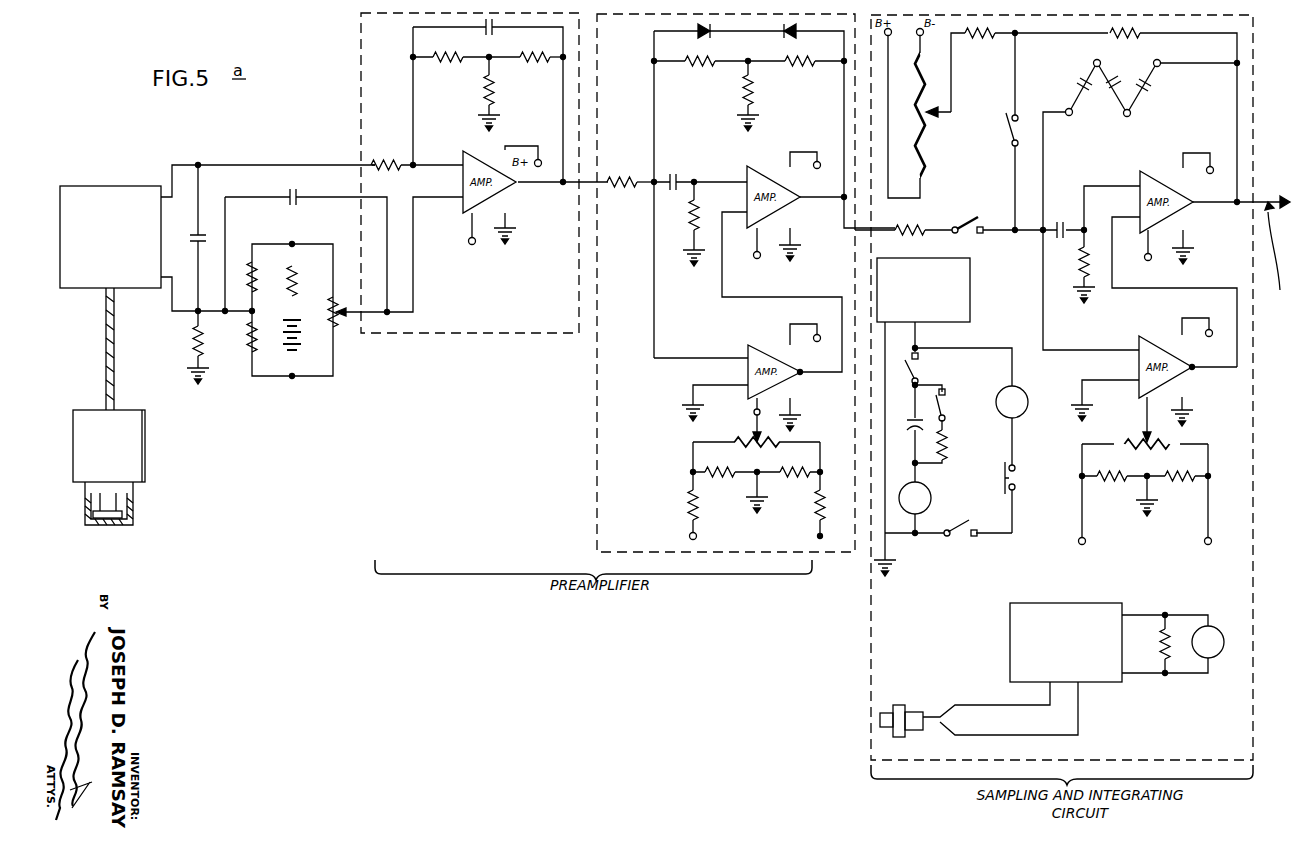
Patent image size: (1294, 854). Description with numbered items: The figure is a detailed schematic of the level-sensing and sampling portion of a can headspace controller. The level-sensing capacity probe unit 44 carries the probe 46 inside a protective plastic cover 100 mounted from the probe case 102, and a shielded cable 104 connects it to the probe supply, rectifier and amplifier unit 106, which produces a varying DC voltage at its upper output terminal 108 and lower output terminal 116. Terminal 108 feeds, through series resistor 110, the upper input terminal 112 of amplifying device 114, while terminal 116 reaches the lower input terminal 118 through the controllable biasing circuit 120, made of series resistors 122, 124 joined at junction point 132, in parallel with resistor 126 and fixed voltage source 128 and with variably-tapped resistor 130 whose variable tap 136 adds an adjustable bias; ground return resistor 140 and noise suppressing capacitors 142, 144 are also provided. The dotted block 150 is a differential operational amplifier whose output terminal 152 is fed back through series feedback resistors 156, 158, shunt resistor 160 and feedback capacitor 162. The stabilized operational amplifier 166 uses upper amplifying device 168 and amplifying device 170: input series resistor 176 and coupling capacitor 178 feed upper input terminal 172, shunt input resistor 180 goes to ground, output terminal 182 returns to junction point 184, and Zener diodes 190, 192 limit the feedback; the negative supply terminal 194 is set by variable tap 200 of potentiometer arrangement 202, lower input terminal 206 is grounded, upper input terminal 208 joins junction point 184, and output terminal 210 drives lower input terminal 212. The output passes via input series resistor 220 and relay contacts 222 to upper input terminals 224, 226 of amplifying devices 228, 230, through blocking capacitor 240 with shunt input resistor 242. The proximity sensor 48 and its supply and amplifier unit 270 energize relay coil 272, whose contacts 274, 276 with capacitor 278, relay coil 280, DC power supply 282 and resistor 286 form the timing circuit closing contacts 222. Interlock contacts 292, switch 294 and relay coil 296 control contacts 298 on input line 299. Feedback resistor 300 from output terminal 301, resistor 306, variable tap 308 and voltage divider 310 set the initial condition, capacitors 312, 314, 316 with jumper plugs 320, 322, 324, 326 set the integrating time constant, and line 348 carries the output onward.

The level-sensing capacity probe unit 44 is at (140, 458).
The probe 46 is at (129, 513).
The electromagnetic proximity sensor 48 is at (899, 705).
The protective plastic cover 100 is at (108, 537).
The probe case 102 is at (146, 423).
The shielded cable 104 is at (114, 346).
The probe supply, rectifier and amplifier unit 106 is at (108, 186).
The upper output terminal 108 is at (162, 199).
The series resistor 110 is at (383, 161).
The upper input terminal 112 is at (462, 164).
The amplifying device 114 is at (462, 191).
The lower output terminal 116 is at (134, 275).
The lower input terminal 118 is at (469, 210).
The controllable biasing circuit 120 is at (317, 312).
The resistor 122 is at (254, 273).
The resistor 124 is at (254, 340).
The resistor 126 is at (294, 278).
The fixed voltage source 128 is at (297, 320).
The variably-tapped resistor 130 is at (336, 334).
The junction point 132 is at (254, 309).
The variable tap 136 is at (336, 309).
The ground return resistor 140 is at (202, 347).
The electrical noise suppressing capacitor 142 is at (204, 222).
The electrical noise suppressing capacitor 144 is at (306, 193).
The differential operational DC amplifier 150 is at (505, 335).
The output terminal 152 is at (520, 186).
The series feedback resistor 156 is at (524, 64).
The series feedback resistor 158 is at (450, 62).
The shunt resistor 160 is at (492, 101).
The feedback capacitor 162 is at (480, 38).
The stabilized operational amplifier 166 is at (597, 431).
The upper amplifying device 168 is at (756, 176).
The amplifying device 170 is at (762, 352).
The upper input terminal 172 is at (747, 181).
The input series resistor 176 is at (620, 182).
The coupling capacitor 178 is at (672, 174).
The shunt input resistor 180 is at (694, 220).
The output terminal 182 is at (803, 200).
The junction point 184 is at (654, 182).
The Zener diode 190 is at (698, 32).
The Zener diode 192 is at (796, 34).
The negative supply terminal 194 is at (754, 413).
The variable tap 200 is at (752, 432).
The potentiometer-type arrangement 202 is at (785, 440).
The lower input terminal 206 is at (748, 385).
The upper input terminal 208 is at (748, 356).
The output terminal 210 is at (800, 372).
The lower input terminal 212 is at (747, 212).
The input series resistor 220 is at (916, 226).
The relay contacts 222 is at (972, 232).
The upper input terminal 224 is at (1138, 184).
The upper input terminal 226 is at (1139, 346).
The amplifying device 228 is at (1152, 170).
The amplifying device 230 is at (1147, 342).
The blocking capacitor 240 is at (1060, 222).
The shunt input resistor 242 is at (1078, 272).
The proximity sensor supply and amplifier unit 270 is at (1064, 603).
The relay coil 272 is at (1212, 658).
The relay contacts 274 is at (918, 368).
The relay contacts 276 is at (943, 407).
The capacitor 278 is at (908, 422).
The relay coil 280 is at (930, 490).
The DC power supply 282 is at (970, 294).
The resistor 286 is at (948, 445).
The filler-motor interlock contacts 292 is at (958, 538).
The manually-operable switch 294 is at (1014, 480).
The relay coil 296 is at (1022, 394).
The relay contacts 298 is at (1006, 129).
The input line 299 is at (1028, 238).
The feedback resistor 300 is at (1136, 37).
The output terminal 301 is at (1193, 202).
The resistor 306 is at (993, 35).
The variable tap 308 is at (952, 110).
The voltage divider 310 is at (912, 118).
The capacitor 312 is at (1078, 83).
The capacitor 314 is at (1112, 92).
The capacitor 316 is at (1151, 83).
The jumper plug 320 is at (1068, 116).
The jumper plug 322 is at (1096, 60).
The jumper plug 324 is at (1130, 114).
The jumper plug 326 is at (1163, 60).
The line 348 is at (1262, 202).